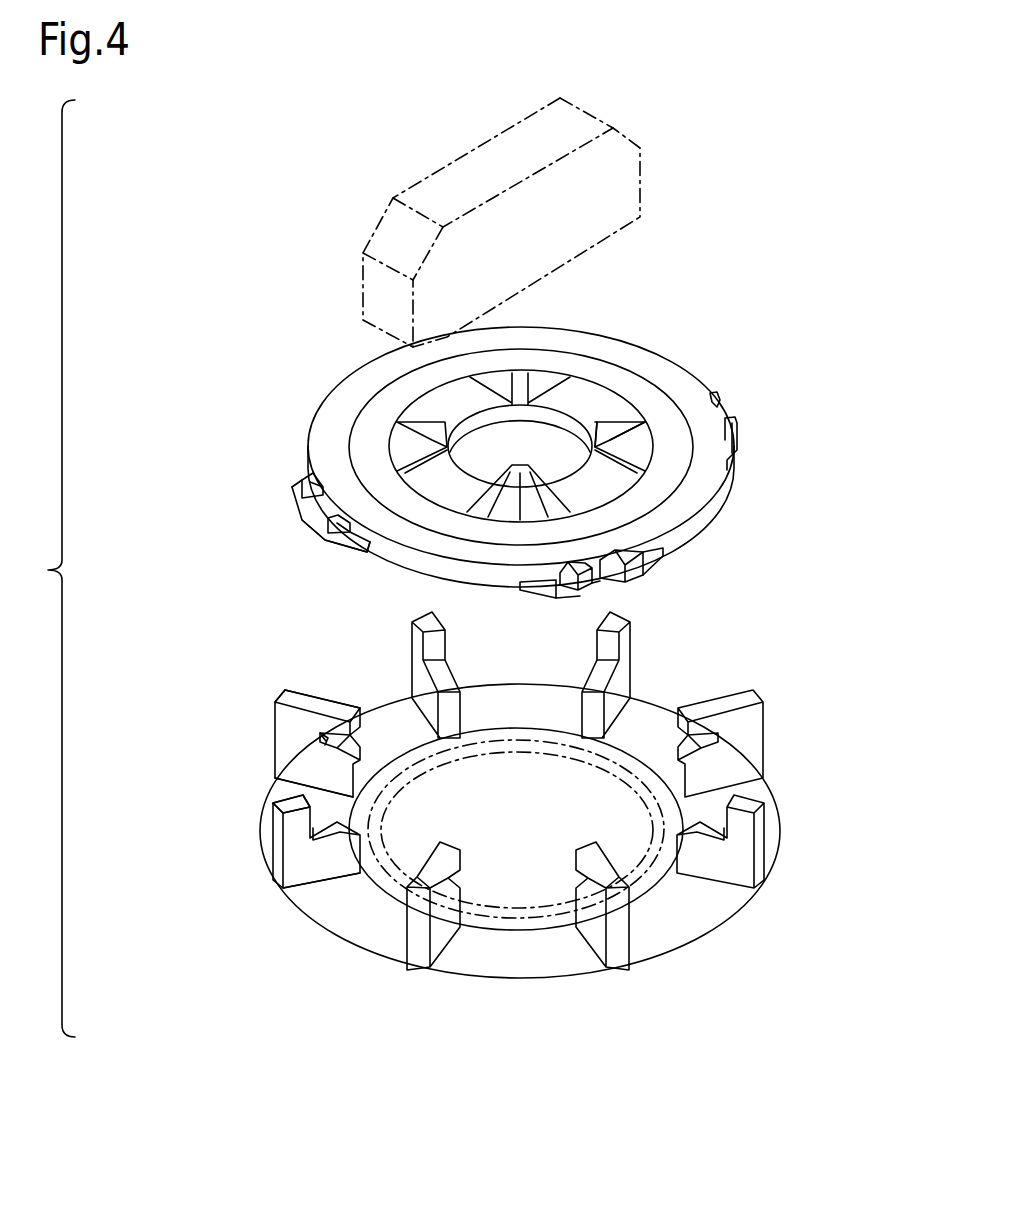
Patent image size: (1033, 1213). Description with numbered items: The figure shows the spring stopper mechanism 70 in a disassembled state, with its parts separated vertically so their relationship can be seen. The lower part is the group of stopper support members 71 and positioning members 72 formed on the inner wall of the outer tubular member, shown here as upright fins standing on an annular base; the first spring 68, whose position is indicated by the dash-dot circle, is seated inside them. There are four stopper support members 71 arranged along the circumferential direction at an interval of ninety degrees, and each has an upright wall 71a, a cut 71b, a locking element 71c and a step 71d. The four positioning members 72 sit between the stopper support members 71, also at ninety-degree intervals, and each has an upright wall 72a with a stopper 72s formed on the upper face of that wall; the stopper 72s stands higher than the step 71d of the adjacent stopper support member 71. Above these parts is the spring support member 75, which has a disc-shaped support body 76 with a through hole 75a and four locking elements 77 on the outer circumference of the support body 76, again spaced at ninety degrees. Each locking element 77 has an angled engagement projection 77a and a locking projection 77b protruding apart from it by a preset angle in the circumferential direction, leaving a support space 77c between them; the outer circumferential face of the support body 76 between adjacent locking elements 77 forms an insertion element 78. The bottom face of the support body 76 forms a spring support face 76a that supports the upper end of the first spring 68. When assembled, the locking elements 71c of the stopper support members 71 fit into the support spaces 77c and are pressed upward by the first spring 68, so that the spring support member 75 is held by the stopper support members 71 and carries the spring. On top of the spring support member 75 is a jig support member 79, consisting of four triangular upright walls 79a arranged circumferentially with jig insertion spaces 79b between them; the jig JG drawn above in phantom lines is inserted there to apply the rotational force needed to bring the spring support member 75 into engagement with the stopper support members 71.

The spring stopper mechanism 70 is at (113, 676).
The jig JG is at (625, 186).
The spring support member 75 is at (343, 382).
The through hole 75a is at (548, 430).
The support body 76 is at (325, 401).
The spring support face 76a is at (718, 521).
The locking element 77 is at (214, 448).
The engagement projection 77a is at (305, 483).
The locking projection 77b is at (318, 517).
The support space 77c is at (313, 505).
The insertion element 78 is at (430, 568).
The jig support member 79 is at (824, 290).
The triangular upright wall 79a is at (625, 410).
The jig insertion space 79b is at (600, 402).
The stopper support member 71 is at (198, 643).
The upright wall 71a is at (302, 767).
The cut 71b is at (300, 701).
The locking element 71c is at (330, 733).
The step 71d is at (318, 731).
The positioning member 72 is at (168, 857).
The upright wall 72a is at (302, 875).
The stopper 72s is at (277, 837).
The first spring 68 is at (520, 905).